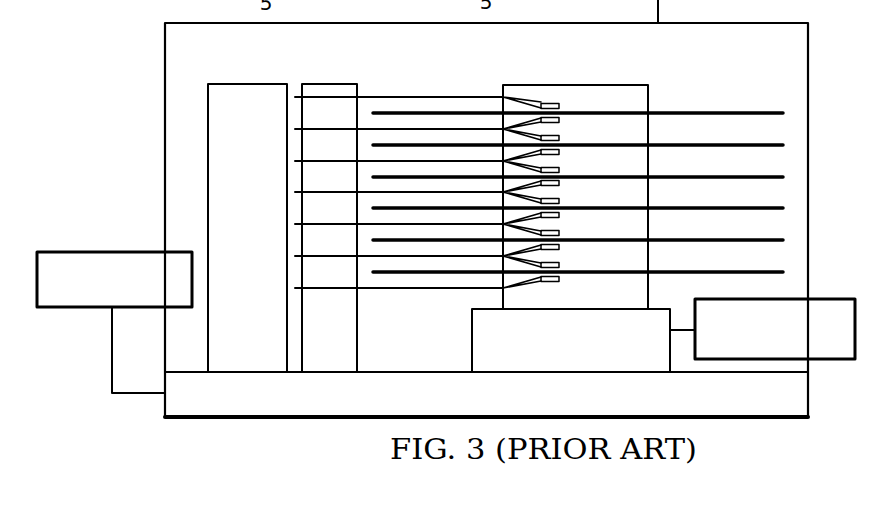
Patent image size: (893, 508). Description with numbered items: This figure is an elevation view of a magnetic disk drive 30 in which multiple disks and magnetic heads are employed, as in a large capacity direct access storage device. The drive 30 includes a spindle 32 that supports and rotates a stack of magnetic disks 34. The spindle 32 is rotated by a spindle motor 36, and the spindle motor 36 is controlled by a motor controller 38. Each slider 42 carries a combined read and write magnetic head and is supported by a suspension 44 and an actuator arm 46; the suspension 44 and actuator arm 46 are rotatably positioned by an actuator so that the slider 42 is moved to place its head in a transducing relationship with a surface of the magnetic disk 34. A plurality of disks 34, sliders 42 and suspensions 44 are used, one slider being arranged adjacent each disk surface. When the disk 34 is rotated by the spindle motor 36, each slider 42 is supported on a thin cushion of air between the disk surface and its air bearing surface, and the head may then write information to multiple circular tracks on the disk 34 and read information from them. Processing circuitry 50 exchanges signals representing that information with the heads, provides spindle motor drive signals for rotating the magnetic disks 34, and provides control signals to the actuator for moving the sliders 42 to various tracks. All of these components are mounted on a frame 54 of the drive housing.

The magnetic disk drive 30 is at (700, 81).
The spindle 32 is at (634, 84).
The magnetic disk 34 is at (760, 115).
The spindle motor 36 is at (562, 353).
The motor controller 38 is at (842, 360).
The slider 42 is at (553, 122).
The suspension 44 is at (526, 133).
The actuator arm 46 is at (457, 128).
The processing circuitry 50 is at (96, 252).
The frame 54 is at (282, 419).